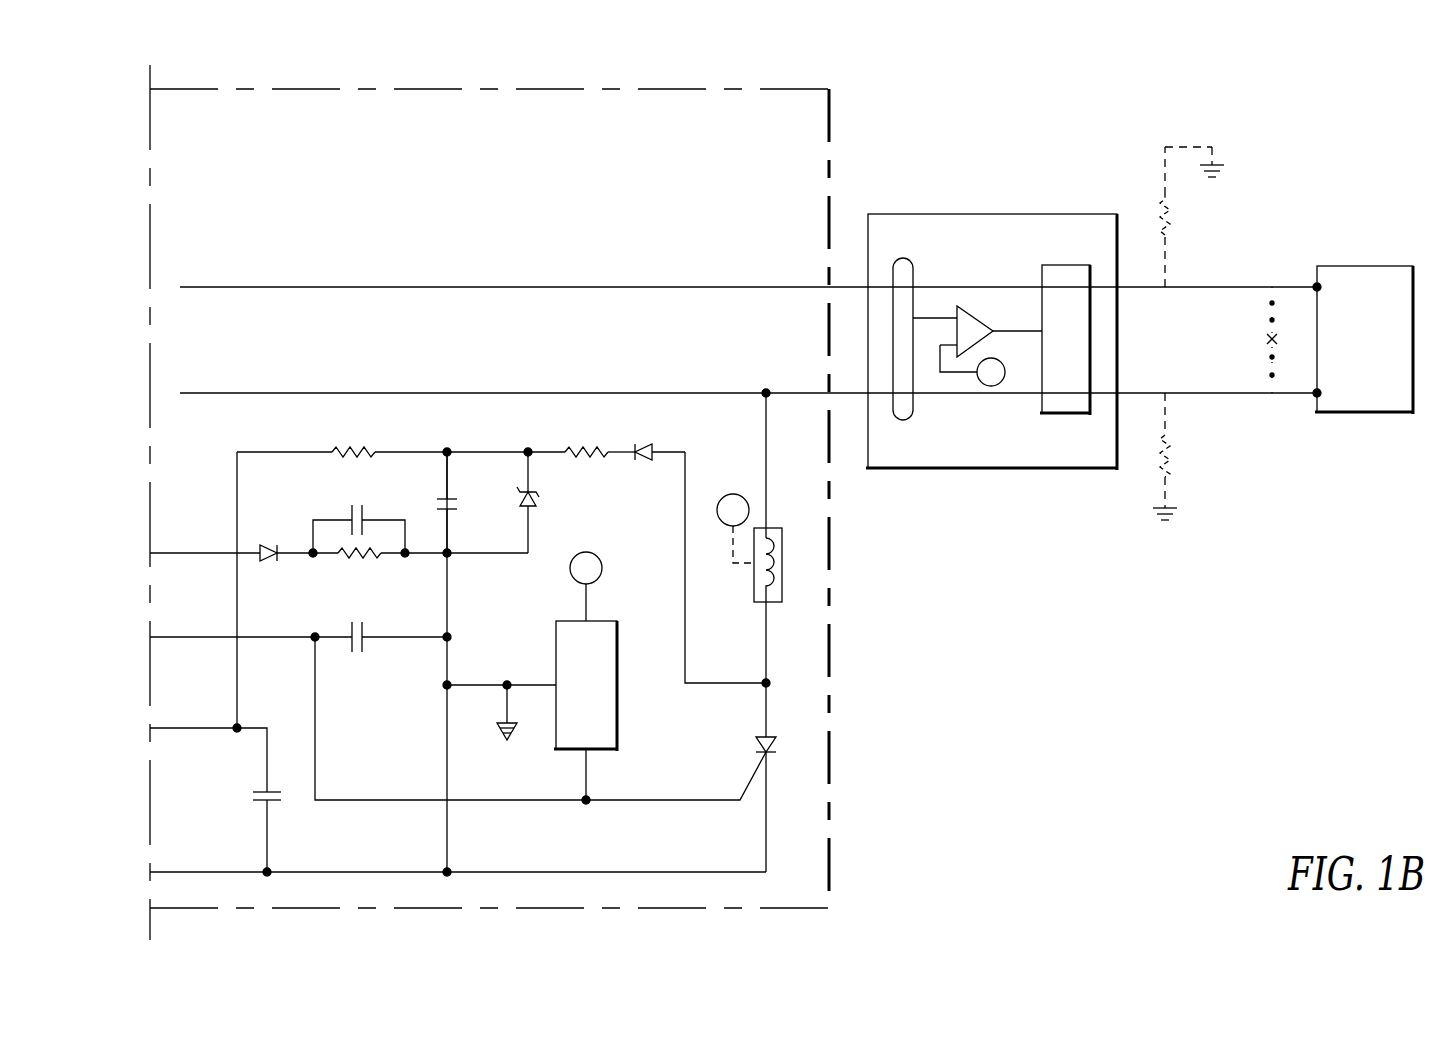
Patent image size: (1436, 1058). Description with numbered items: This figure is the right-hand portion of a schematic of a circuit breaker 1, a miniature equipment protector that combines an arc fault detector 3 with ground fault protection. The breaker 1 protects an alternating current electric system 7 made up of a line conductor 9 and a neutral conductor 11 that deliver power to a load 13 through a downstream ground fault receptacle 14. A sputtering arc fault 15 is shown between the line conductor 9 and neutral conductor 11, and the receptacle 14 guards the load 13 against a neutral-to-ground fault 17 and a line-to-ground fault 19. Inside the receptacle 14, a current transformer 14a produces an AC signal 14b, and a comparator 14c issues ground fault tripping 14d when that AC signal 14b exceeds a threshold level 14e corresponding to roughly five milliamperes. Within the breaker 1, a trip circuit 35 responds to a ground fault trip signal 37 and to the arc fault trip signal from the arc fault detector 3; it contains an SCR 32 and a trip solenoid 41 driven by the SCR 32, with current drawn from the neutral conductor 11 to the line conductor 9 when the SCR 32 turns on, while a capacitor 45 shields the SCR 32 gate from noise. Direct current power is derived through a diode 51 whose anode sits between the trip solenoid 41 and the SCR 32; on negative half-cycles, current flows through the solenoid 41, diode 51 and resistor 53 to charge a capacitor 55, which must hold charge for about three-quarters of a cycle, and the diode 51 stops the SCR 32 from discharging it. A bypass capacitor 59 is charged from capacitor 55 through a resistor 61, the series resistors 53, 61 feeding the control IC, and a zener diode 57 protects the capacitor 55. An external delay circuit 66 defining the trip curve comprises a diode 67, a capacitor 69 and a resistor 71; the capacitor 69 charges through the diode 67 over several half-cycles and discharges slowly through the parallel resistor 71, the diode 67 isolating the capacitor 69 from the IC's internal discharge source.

The circuit breaker 1 is at (636, 911).
The arc fault detector 3 is at (618, 708).
The alternating current electric system 7 is at (1272, 230).
The line conductor 9 is at (1215, 287).
The neutral conductor 11 is at (1215, 394).
The load 13 is at (1352, 413).
The ground fault receptacle 14 is at (1032, 469).
The current transformer 14a is at (903, 258).
The AC signal 14b is at (938, 318).
The comparator 14c is at (978, 322).
The ground fault tripping 14d is at (1058, 265).
The threshold level 14e is at (1000, 383).
The sputtering arc fault 15 is at (1268, 339).
The neutral-to-ground fault 17 is at (1172, 460).
The line-to-ground fault 19 is at (1172, 222).
The SCR 32 is at (768, 755).
The trip circuit 35 is at (790, 636).
The ground fault trip signal 37 is at (183, 634).
The trip solenoid 41 is at (760, 608).
The capacitor 45 is at (365, 645).
The diode 51 is at (645, 462).
The resistor 53 is at (582, 442).
The capacitor 55 is at (452, 512).
The zener diode 57 is at (538, 498).
The bypass capacitor 59 is at (262, 806).
The resistor 61 is at (362, 452).
The external delay circuit 66 is at (336, 506).
The diode 67 is at (264, 558).
The capacitor 69 is at (365, 508).
The resistor 71 is at (350, 560).